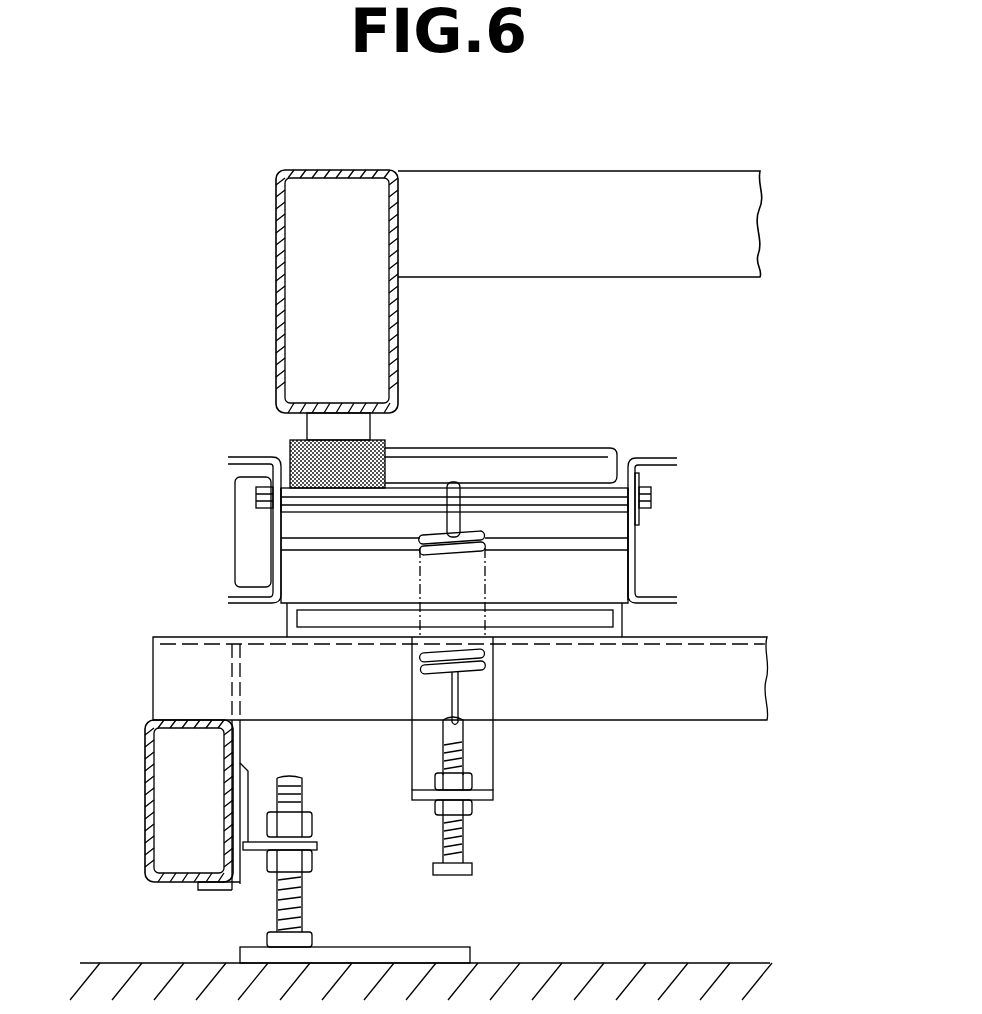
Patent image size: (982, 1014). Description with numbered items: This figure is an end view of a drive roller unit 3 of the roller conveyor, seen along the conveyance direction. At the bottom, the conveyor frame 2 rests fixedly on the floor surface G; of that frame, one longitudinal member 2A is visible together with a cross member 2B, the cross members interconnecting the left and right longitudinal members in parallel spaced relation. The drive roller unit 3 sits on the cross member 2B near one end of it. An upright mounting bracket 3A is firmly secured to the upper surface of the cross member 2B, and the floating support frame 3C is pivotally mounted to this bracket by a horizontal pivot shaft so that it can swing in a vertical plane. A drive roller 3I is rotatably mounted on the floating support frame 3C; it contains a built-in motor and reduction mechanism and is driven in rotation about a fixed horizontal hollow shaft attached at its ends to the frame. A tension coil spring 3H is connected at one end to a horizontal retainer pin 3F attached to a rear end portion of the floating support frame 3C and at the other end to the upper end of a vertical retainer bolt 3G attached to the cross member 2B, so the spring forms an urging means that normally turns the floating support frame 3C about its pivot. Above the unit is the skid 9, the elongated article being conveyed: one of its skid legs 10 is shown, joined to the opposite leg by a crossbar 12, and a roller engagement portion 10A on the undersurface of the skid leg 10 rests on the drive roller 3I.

The skid 9 is at (248, 180).
The skid leg 10 is at (276, 278).
The roller engagement portion 10A is at (320, 423).
The crossbar 12 is at (577, 171).
The drive roller unit 3 is at (218, 550).
The drive roller 3I is at (463, 457).
The horizontal retainer pin 3F is at (573, 490).
The floating support frame 3C is at (635, 568).
The upright mounting bracket 3A is at (625, 622).
The tension coil spring 3H is at (493, 668).
The vertical retainer bolt 3G is at (470, 868).
The conveyor frame 2 is at (137, 780).
The longitudinal member 2A is at (145, 840).
The cross member 2B is at (165, 680).
The floor surface G is at (650, 962).